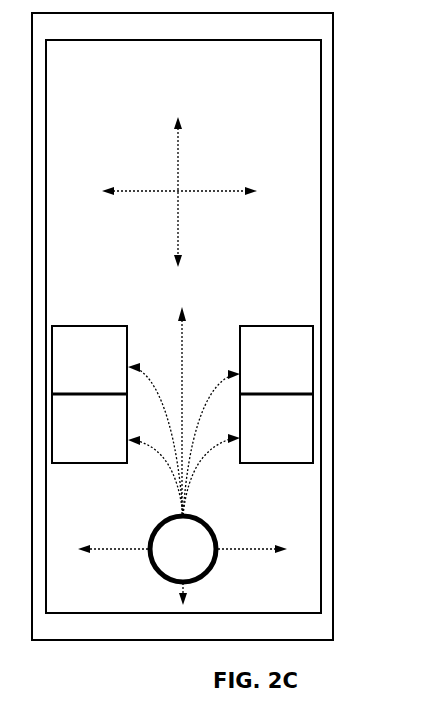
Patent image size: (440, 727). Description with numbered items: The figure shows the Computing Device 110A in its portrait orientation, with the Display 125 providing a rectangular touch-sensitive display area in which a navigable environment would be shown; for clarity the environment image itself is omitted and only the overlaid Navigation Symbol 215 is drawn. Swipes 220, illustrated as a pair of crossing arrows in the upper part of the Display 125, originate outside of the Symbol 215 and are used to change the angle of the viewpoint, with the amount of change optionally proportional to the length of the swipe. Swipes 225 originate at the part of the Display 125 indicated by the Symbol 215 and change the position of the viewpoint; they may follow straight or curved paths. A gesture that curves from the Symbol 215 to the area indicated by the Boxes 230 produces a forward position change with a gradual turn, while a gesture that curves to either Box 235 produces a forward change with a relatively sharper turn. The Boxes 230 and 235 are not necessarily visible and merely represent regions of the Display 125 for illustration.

The computing device 110A is at (334, 338).
The display 125 is at (130, 126).
The swipes 220 is at (180, 165).
The boxes 230 is at (107, 370).
The boxes 235 is at (107, 442).
The swipes 225 is at (207, 402).
The navigation symbol 215 is at (148, 554).